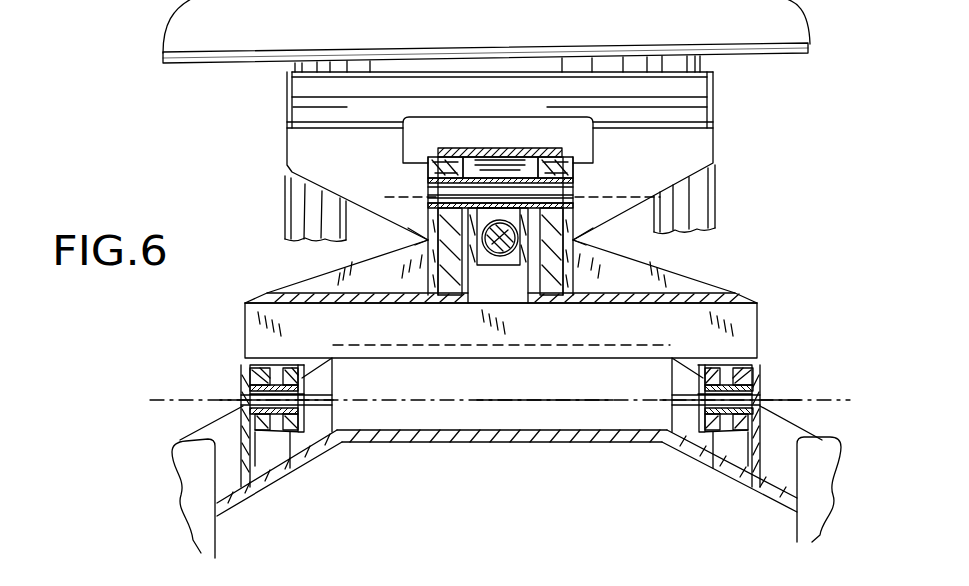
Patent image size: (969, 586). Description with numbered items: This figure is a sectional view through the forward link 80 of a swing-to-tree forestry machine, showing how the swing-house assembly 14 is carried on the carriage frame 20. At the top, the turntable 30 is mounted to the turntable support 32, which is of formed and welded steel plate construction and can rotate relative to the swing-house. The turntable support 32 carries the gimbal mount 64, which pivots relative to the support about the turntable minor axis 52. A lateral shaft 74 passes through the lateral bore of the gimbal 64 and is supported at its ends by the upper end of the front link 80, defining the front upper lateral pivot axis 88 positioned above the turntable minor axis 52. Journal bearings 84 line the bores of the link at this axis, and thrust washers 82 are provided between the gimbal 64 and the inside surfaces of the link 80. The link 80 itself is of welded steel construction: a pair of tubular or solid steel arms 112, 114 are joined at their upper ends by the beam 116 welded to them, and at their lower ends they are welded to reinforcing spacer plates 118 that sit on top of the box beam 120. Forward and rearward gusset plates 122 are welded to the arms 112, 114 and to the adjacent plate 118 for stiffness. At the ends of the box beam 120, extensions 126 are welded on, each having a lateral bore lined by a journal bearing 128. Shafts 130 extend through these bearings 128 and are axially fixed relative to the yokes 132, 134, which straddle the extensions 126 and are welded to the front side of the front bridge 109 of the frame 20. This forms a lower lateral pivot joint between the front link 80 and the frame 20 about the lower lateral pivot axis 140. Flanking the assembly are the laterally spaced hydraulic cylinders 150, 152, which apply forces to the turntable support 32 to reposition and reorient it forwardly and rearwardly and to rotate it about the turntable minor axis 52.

The swing-house assembly 14 is at (814, 25).
The turntable 30 is at (214, 60).
The turntable support 32 is at (718, 96).
The hydraulic cylinder 152 is at (288, 202).
The hydraulic cylinder 150 is at (713, 187).
The beam 116 is at (556, 150).
The gimbal mount 64 is at (498, 165).
The thrust washers 82 is at (470, 178).
The lateral shaft 74 is at (580, 187).
The front upper lateral pivot axis 88 is at (389, 197).
The journal bearings 84 is at (430, 208).
The turntable minor axis 52 is at (505, 254).
The arm 112 is at (408, 232).
The arm 114 is at (597, 225).
The gusset plates 122 is at (347, 266).
The reinforcing spacer plates 118 is at (384, 293).
The front link 80 is at (715, 276).
The box beam 120 is at (567, 352).
The lower lateral pivot axis 140 is at (838, 396).
The yoke 132 is at (243, 466).
The journal bearings 128 is at (255, 388).
The shafts 130 is at (242, 405).
The extensions 126 is at (267, 433).
The front bridge 109 is at (488, 442).
The yoke 134 is at (697, 441).
The carriage frame 20 is at (226, 534).